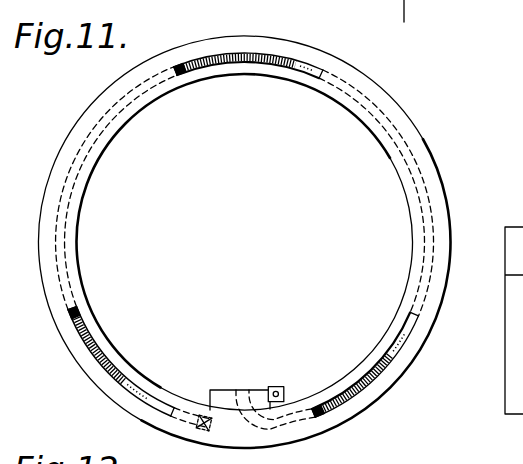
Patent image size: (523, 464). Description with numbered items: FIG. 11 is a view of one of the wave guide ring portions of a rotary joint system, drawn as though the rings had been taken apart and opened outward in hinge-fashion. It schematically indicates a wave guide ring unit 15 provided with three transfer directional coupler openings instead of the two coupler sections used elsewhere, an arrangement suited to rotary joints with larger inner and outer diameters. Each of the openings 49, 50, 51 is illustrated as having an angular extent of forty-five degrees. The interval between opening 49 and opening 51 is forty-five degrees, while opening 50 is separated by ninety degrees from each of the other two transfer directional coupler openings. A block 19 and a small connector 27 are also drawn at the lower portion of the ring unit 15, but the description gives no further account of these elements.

The wave guide ring unit 15 is at (427, 143).
The opening 50 is at (278, 62).
The opening 51 is at (391, 355).
The opening 49 is at (127, 382).
The contact block 19 is at (252, 390).
The connector 27 is at (190, 431).